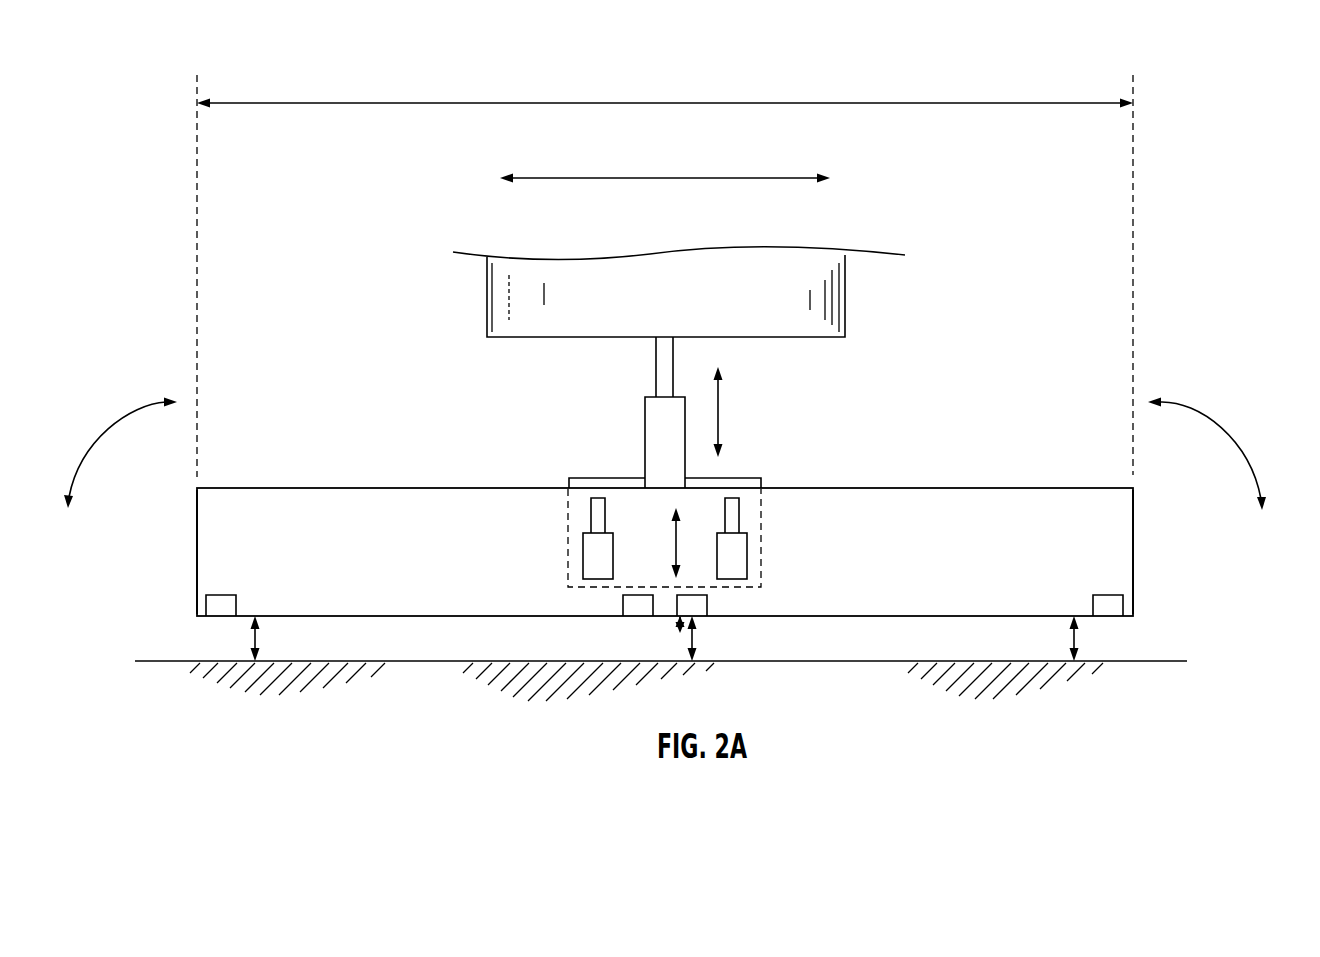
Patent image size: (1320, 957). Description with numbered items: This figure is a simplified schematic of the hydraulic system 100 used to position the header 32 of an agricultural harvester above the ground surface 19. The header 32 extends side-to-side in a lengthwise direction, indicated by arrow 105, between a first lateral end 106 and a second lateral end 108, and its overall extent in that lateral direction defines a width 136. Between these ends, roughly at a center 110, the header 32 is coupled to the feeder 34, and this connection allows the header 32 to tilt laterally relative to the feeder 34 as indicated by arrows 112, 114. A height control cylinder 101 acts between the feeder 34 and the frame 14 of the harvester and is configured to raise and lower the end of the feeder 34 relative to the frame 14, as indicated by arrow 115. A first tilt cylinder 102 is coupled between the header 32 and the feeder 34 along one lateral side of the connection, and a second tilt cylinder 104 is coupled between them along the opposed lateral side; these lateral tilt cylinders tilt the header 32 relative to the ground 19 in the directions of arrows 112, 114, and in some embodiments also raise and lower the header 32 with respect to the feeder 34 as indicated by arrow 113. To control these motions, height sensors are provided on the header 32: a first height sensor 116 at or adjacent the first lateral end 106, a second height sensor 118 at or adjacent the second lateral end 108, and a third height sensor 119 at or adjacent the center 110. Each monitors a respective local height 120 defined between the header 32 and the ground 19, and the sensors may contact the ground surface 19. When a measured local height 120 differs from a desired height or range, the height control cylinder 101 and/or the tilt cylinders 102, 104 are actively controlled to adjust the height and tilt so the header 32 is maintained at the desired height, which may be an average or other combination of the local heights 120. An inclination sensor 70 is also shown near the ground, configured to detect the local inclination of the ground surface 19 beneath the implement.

The frame 14 is at (487, 307).
The ground surface 19 is at (175, 661).
The header 32 is at (406, 478).
The feeder 34 is at (733, 478).
The inclination sensor 70 is at (616, 617).
The hydraulic system 100 is at (995, 370).
The height control cylinder 101 is at (645, 430).
The first tilt cylinder 102 is at (598, 566).
The second tilt cylinder 104 is at (742, 558).
The lengthwise direction arrow 105 is at (698, 178).
The first lateral end 106 is at (196, 532).
The second lateral end 108 is at (1133, 527).
The center of the header 110 is at (676, 617).
The lateral tilt arrow 112 is at (100, 425).
The header raise/lower arrow 113 is at (675, 548).
The lateral tilt arrow 114 is at (1230, 425).
The feeder raise/lower arrow 115 is at (720, 415).
The first height sensor 116 is at (215, 595).
The second height sensor 118 is at (1110, 595).
The third height sensor 119 is at (703, 617).
The local height 120 is at (260, 637).
The width 136 is at (354, 103).